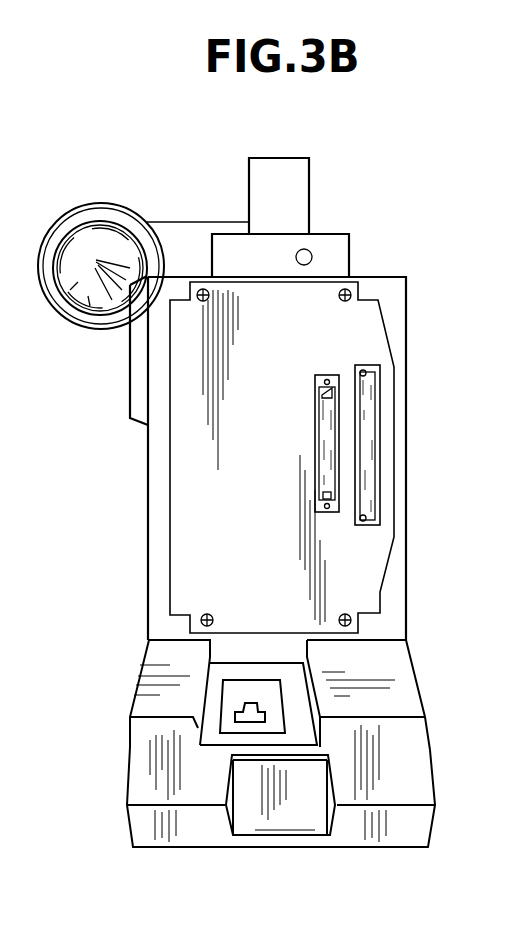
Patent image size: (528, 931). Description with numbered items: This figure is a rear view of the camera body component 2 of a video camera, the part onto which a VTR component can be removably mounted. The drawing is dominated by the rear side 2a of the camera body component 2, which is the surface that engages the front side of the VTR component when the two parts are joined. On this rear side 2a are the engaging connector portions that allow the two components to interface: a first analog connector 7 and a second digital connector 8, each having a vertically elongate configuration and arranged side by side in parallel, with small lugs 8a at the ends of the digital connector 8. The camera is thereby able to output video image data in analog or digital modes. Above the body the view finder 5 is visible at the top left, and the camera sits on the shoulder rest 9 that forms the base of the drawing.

The camera body component 2 is at (407, 306).
The rear side 2a is at (360, 338).
The view finder 5 is at (193, 235).
The first analog connector 7 is at (378, 433).
The second digital connector 8 is at (335, 470).
The connector lug 8a is at (326, 398).
The shoulder rest 9 is at (397, 683).